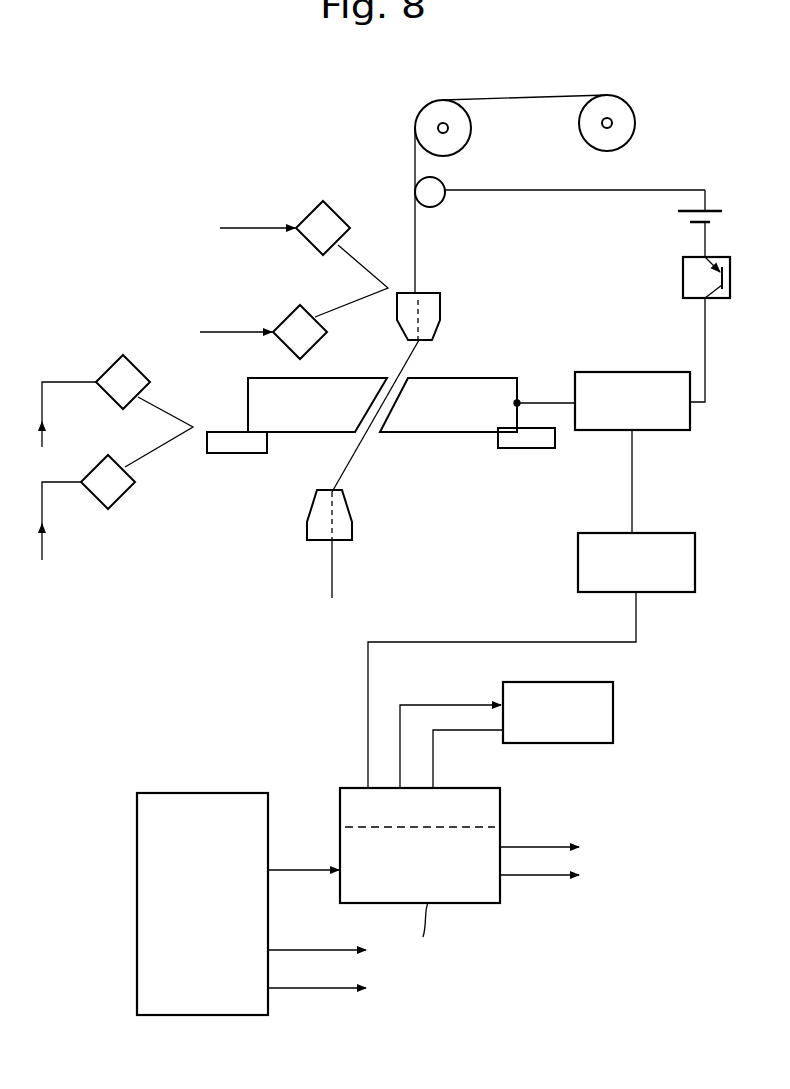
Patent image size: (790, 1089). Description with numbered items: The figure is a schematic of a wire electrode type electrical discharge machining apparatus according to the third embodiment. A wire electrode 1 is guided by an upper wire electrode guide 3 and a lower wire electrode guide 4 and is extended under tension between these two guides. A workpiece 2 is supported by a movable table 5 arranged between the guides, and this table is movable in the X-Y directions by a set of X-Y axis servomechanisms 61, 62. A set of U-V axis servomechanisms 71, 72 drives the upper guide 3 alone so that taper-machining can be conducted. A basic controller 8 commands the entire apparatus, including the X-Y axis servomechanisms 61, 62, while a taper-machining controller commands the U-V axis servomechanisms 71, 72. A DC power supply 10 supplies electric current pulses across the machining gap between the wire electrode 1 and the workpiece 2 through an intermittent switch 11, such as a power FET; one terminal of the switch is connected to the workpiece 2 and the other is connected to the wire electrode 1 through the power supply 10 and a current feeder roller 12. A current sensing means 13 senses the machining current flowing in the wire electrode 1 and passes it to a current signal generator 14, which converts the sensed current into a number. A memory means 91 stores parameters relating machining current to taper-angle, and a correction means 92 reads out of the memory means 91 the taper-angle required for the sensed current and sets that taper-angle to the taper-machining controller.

The wire electrode 1 is at (523, 97).
The workpiece 2 is at (493, 388).
The upper wire electrode guide 3 is at (443, 310).
The lower wire electrode guide 4 is at (350, 517).
The movable table 5 is at (232, 447).
The basic controller 8 is at (190, 1017).
The DC power supply 10 is at (710, 205).
The intermittent switch 11 is at (683, 284).
The current feeder roller 12 is at (438, 207).
The current sensing means 13 is at (589, 372).
The current signal generator 14 is at (664, 533).
The X axis servomechanism 61 is at (141, 362).
The Y axis servomechanism 62 is at (119, 500).
The U axis servomechanism 71 is at (324, 200).
The V axis servomechanism 72 is at (287, 311).
The memory means 91 is at (613, 723).
The correction means 92 is at (500, 808).